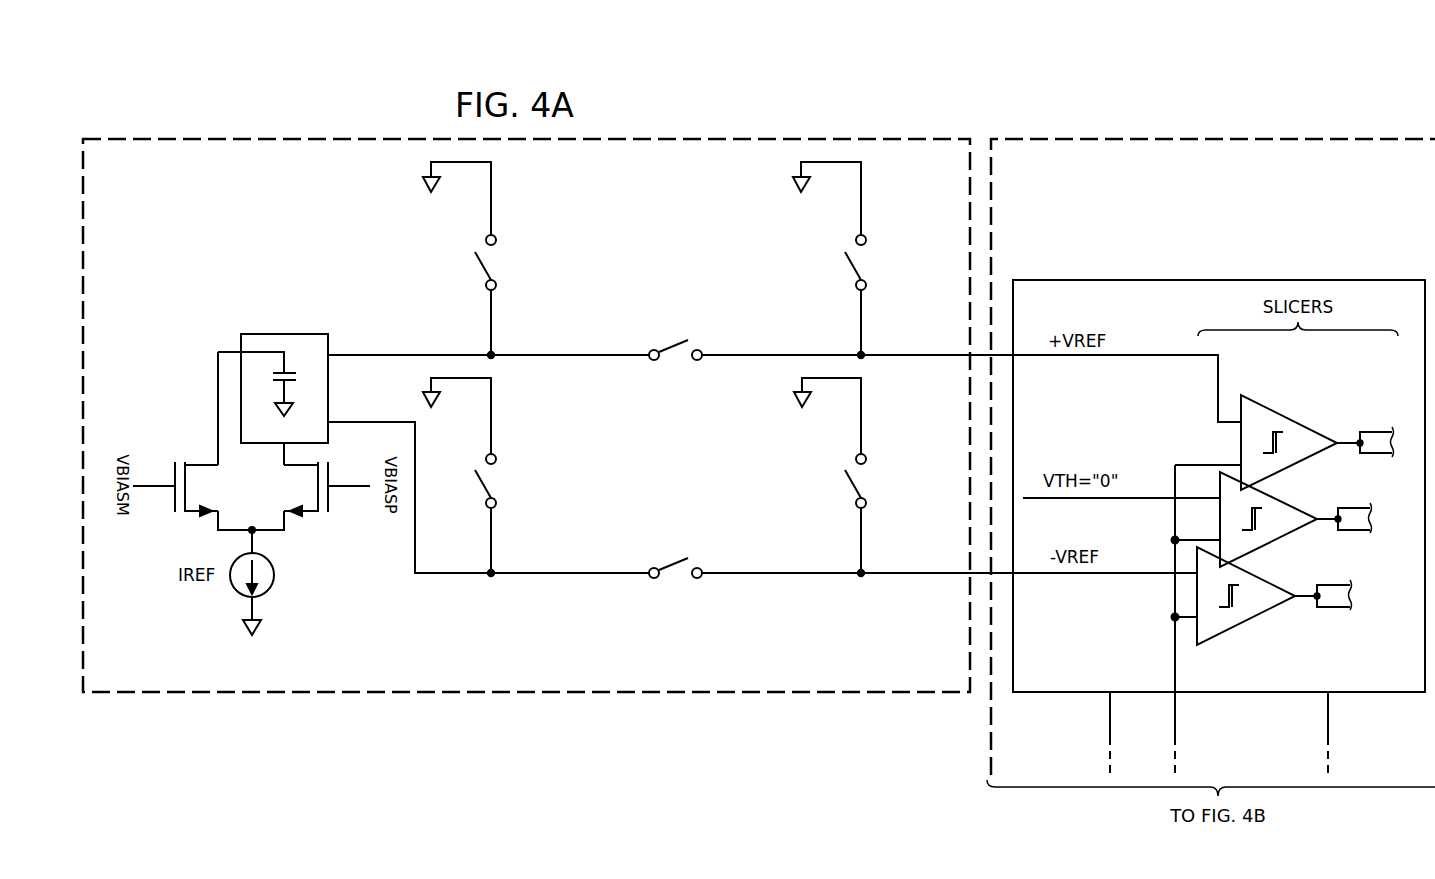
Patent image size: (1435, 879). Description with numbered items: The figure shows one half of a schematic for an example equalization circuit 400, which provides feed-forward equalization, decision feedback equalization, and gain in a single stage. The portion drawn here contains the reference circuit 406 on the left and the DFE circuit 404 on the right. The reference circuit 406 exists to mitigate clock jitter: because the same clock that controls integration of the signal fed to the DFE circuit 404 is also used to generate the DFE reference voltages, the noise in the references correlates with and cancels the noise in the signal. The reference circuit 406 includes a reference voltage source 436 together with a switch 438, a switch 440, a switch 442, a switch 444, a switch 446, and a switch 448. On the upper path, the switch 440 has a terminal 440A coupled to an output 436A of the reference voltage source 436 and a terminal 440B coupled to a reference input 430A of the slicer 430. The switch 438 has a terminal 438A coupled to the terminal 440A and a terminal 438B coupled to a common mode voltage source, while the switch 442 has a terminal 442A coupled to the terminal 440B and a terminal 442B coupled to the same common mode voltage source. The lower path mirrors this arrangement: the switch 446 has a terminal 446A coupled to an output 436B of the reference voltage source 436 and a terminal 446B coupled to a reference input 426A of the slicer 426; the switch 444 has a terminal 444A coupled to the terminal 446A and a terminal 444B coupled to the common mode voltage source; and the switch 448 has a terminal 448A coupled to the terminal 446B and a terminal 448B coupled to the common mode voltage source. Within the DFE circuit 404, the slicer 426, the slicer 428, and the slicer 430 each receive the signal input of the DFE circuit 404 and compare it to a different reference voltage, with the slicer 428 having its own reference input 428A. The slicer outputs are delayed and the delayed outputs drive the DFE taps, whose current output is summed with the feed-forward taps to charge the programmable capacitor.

The equalization circuit 400 is at (365, 83).
The DFE circuit 404 is at (1287, 137).
The reference circuit 406 is at (686, 137).
The slicer 426 is at (1259, 619).
The reference input 426A is at (1147, 577).
The slicer 428 is at (1289, 499).
The reference input 428A is at (1152, 497).
The slicer 430 is at (1304, 417).
The reference input 430A is at (1165, 353).
The reference voltage source 436 is at (278, 333).
The output 436A is at (355, 353).
The output 436B is at (355, 420).
The switch 438 is at (488, 264).
The terminal 438A is at (492, 313).
The terminal 438B is at (492, 220).
The switch 440 is at (674, 358).
The terminal 440A is at (633, 358).
The terminal 440B is at (718, 358).
The switch 442 is at (858, 264).
The terminal 442A is at (862, 313).
The terminal 442B is at (862, 220).
The switch 444 is at (488, 483).
The terminal 444A is at (492, 532).
The terminal 444B is at (492, 439).
The switch 446 is at (674, 576).
The terminal 446A is at (633, 576).
The terminal 446B is at (718, 576).
The switch 448 is at (858, 483).
The terminal 448A is at (862, 532).
The terminal 448B is at (862, 439).